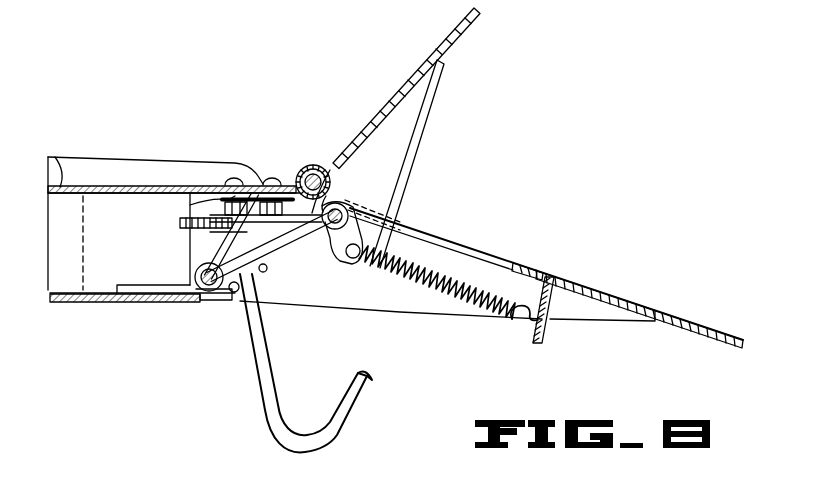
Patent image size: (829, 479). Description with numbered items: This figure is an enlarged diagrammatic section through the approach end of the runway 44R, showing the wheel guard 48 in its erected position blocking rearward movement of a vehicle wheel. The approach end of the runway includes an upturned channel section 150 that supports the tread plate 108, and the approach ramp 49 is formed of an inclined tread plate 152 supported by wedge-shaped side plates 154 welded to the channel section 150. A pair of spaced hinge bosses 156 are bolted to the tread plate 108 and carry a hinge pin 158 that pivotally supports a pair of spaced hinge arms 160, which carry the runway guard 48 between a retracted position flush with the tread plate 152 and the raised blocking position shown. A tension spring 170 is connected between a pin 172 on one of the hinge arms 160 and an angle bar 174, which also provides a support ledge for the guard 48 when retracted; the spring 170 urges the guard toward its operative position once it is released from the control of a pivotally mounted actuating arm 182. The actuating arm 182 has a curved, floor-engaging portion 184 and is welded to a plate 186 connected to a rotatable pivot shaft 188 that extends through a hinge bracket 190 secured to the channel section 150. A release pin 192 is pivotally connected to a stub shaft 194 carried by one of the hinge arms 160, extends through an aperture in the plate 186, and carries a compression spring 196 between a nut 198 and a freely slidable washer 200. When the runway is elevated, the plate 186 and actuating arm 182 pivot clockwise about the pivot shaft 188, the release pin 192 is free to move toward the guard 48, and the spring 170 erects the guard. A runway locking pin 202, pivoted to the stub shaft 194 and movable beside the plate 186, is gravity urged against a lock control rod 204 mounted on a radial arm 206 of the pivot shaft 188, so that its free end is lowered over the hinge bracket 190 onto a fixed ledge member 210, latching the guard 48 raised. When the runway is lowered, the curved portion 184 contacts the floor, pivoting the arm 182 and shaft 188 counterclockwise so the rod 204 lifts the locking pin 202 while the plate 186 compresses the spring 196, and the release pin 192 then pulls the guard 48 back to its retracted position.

The runway 44R is at (70, 153).
The tread plate 108 is at (63, 179).
The upturned channel section 150 is at (48, 290).
The plate 186 is at (190, 243).
The compression spring 196 is at (190, 205).
The nut 198 is at (212, 217).
The freely slidable washer 200 is at (243, 237).
The hinge bracket 190 is at (198, 270).
The pivot shaft 188 is at (212, 292).
The runway locking pin 202 is at (308, 236).
The lock control rod 204 is at (267, 269).
The fixed ledge member 210 is at (232, 293).
The radial arm 206 is at (266, 303).
The actuating arm 182 is at (258, 369).
The curved floor-engaging portion 184 is at (326, 446).
The hinge boss 156 is at (303, 169).
The hinge pin 158 is at (326, 166).
The wheel guard 48 is at (474, 22).
The hinge arm 160 is at (432, 95).
The release pin 192 is at (339, 203).
The stub shaft 194 is at (403, 201).
The pin 172 is at (362, 266).
The wedge-shaped side plate 154 is at (425, 237).
The tension spring 170 is at (462, 303).
The angle bar 174 is at (551, 335).
The approach ramp 49 is at (570, 275).
The inclined tread plate 152 is at (639, 302).